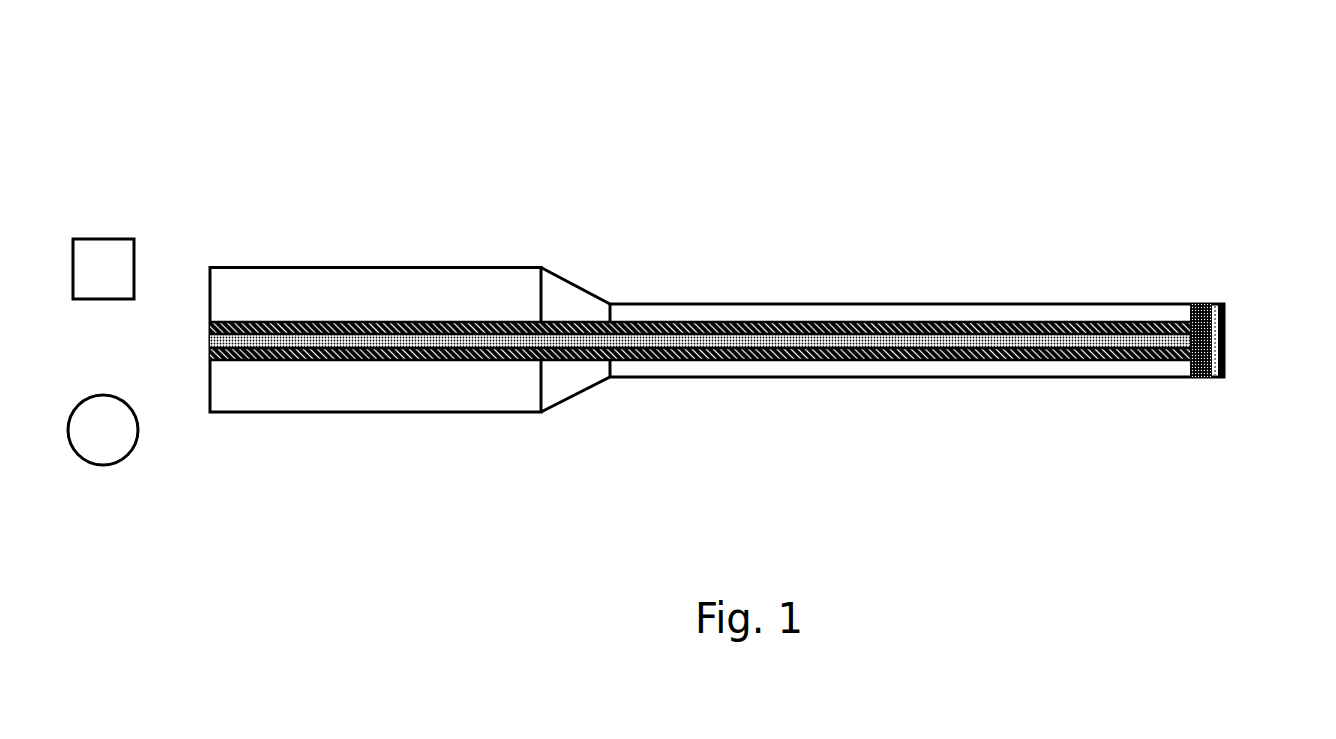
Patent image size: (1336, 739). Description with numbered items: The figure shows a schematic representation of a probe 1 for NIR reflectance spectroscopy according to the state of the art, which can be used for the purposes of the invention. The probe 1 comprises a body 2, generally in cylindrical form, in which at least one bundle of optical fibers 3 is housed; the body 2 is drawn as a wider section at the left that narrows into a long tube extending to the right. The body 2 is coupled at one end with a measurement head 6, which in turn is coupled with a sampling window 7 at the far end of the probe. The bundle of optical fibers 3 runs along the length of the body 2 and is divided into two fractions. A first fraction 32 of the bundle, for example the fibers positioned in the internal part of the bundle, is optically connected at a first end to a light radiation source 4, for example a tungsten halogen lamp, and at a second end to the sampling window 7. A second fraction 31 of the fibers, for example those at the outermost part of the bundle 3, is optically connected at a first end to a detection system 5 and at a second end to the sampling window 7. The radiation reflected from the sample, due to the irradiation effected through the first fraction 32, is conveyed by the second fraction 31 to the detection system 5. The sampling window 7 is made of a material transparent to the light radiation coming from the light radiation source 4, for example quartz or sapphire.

The probe 1 is at (791, 155).
The body 2 is at (883, 380).
The bundle of optical fibers 3 is at (983, 322).
The second fraction of fibers 31 is at (1103, 325).
The first fraction of the bundle of optical fibers 32 is at (1045, 346).
The light radiation source 4 is at (208, 338).
The detection system 5 is at (208, 352).
The measurement head 6 is at (1208, 379).
The sampling window 7 is at (1225, 335).